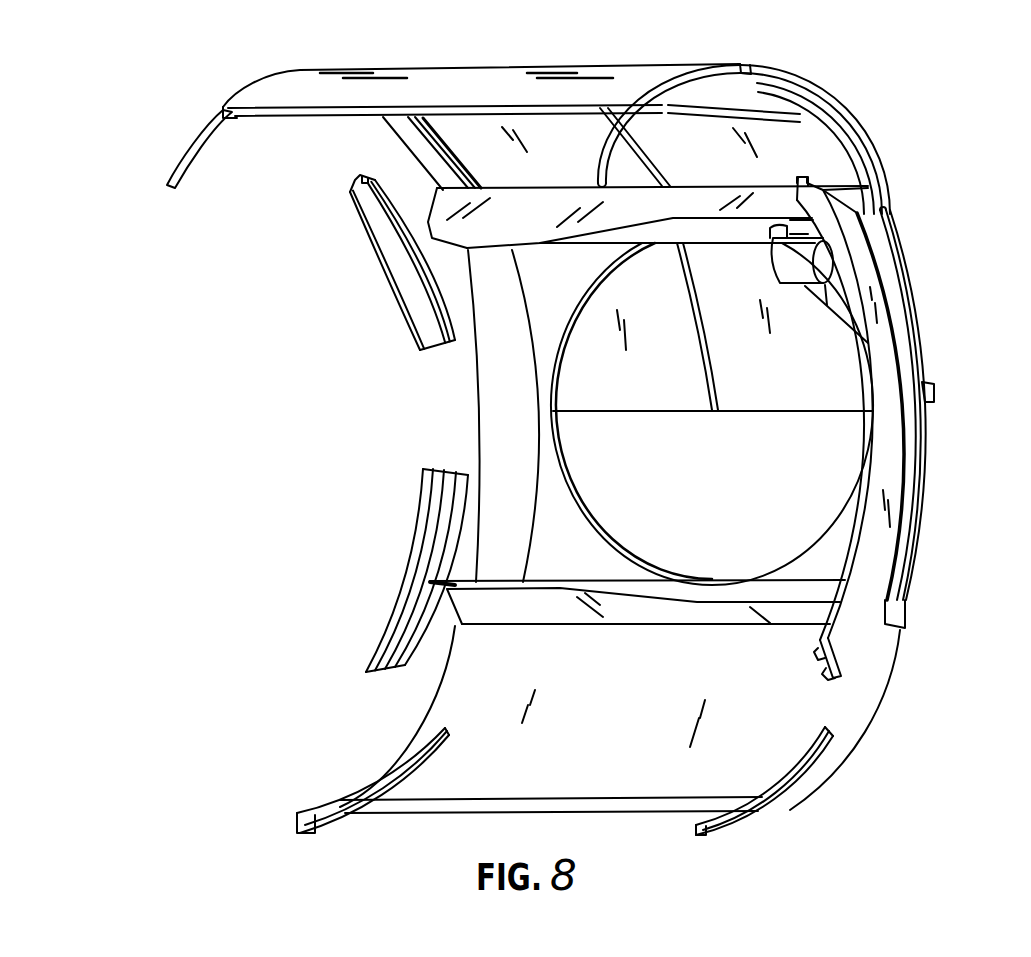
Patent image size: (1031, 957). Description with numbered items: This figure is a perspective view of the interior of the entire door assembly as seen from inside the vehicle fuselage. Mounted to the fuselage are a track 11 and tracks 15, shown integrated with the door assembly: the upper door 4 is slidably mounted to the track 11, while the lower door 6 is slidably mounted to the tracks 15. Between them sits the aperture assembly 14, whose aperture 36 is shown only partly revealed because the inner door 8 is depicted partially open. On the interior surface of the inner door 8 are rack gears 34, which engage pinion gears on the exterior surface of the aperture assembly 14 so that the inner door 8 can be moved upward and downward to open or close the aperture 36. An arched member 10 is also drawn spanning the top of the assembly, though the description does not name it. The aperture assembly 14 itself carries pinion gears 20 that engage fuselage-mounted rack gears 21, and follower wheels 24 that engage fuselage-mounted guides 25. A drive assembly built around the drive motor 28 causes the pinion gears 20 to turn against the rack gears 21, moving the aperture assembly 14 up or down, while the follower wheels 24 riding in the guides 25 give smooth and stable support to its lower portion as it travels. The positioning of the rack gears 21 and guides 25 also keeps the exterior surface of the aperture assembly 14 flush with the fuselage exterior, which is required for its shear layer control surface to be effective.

The upper door 4 is at (267, 92).
The lower door 6 is at (843, 747).
The inner door 8 is at (790, 343).
The arch rib 10 is at (757, 73).
The track 11 is at (193, 143).
The aperture assembly 14 is at (910, 563).
The tracks 15 is at (343, 807).
The pinion gears 20 is at (437, 243).
The fuselage-mounted rack gears 21 is at (410, 320).
The follower wheels 24 is at (437, 582).
The fuselage-mounted guides 25 is at (850, 640).
The drive motor 28 is at (830, 262).
The rack gears 34 is at (423, 123).
The aperture 36 is at (797, 453).